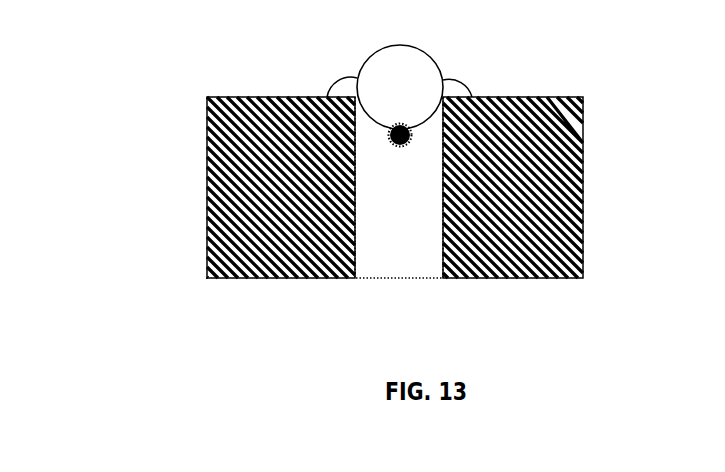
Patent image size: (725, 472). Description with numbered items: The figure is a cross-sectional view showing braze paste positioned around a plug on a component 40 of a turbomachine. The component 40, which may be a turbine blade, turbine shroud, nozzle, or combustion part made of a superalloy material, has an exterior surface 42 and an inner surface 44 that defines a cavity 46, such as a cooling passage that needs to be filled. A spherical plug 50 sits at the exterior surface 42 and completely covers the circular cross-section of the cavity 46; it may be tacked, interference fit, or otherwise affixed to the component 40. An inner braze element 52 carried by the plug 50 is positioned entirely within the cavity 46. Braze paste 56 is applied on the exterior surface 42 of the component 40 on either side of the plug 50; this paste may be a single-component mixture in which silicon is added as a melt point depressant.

The component 40 is at (441, 170).
The exterior surface 42 is at (513, 97).
The inner surface 44 is at (355, 140).
The cavity 46 is at (404, 218).
The plug 50 is at (378, 48).
The inner braze element 52 is at (412, 137).
The braze paste 56 is at (338, 83).